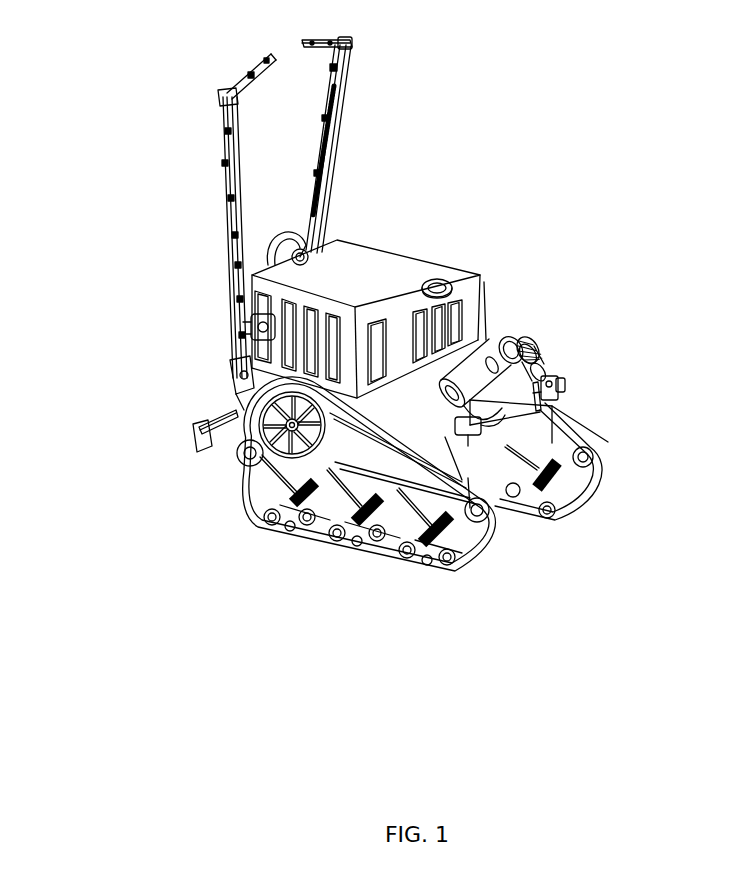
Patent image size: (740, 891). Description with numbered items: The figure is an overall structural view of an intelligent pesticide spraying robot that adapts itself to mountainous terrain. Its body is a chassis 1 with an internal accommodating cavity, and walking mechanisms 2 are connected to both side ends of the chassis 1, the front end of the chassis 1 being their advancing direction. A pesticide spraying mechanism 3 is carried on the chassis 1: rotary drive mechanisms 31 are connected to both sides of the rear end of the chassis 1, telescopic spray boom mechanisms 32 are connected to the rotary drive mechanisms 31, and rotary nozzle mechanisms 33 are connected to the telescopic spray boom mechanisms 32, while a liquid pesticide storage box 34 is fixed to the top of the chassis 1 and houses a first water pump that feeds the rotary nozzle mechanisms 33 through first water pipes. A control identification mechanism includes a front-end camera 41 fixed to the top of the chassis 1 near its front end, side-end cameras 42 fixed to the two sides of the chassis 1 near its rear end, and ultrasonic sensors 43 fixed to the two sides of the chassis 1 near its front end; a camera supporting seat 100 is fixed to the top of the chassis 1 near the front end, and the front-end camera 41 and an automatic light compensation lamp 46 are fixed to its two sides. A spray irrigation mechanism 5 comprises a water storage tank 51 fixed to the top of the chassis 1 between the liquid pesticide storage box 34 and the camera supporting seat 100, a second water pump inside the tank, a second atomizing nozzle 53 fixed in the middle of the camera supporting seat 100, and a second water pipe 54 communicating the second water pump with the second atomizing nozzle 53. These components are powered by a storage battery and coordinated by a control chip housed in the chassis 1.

The chassis 1 is at (563, 508).
The walking mechanisms 2 is at (278, 490).
The pesticide spraying mechanism 3 is at (93, 38).
The spray irrigation mechanism 5 is at (620, 153).
The rotary drive mechanisms 31 is at (233, 380).
The telescopic spray boom mechanisms 32 is at (227, 208).
The rotary nozzle mechanisms 33 is at (224, 98).
The liquid pesticide storage box 34 is at (262, 282).
The front-end camera 41 is at (563, 400).
The side-end cameras 42 is at (240, 452).
The ultrasonic sensors 43 is at (479, 540).
The automatic light compensation lamp 46 is at (538, 358).
The water storage tank 51 is at (447, 287).
The second atomizing nozzle 53 is at (508, 338).
The second water pipe 54 is at (483, 288).
The camera supporting seat 100 is at (603, 462).